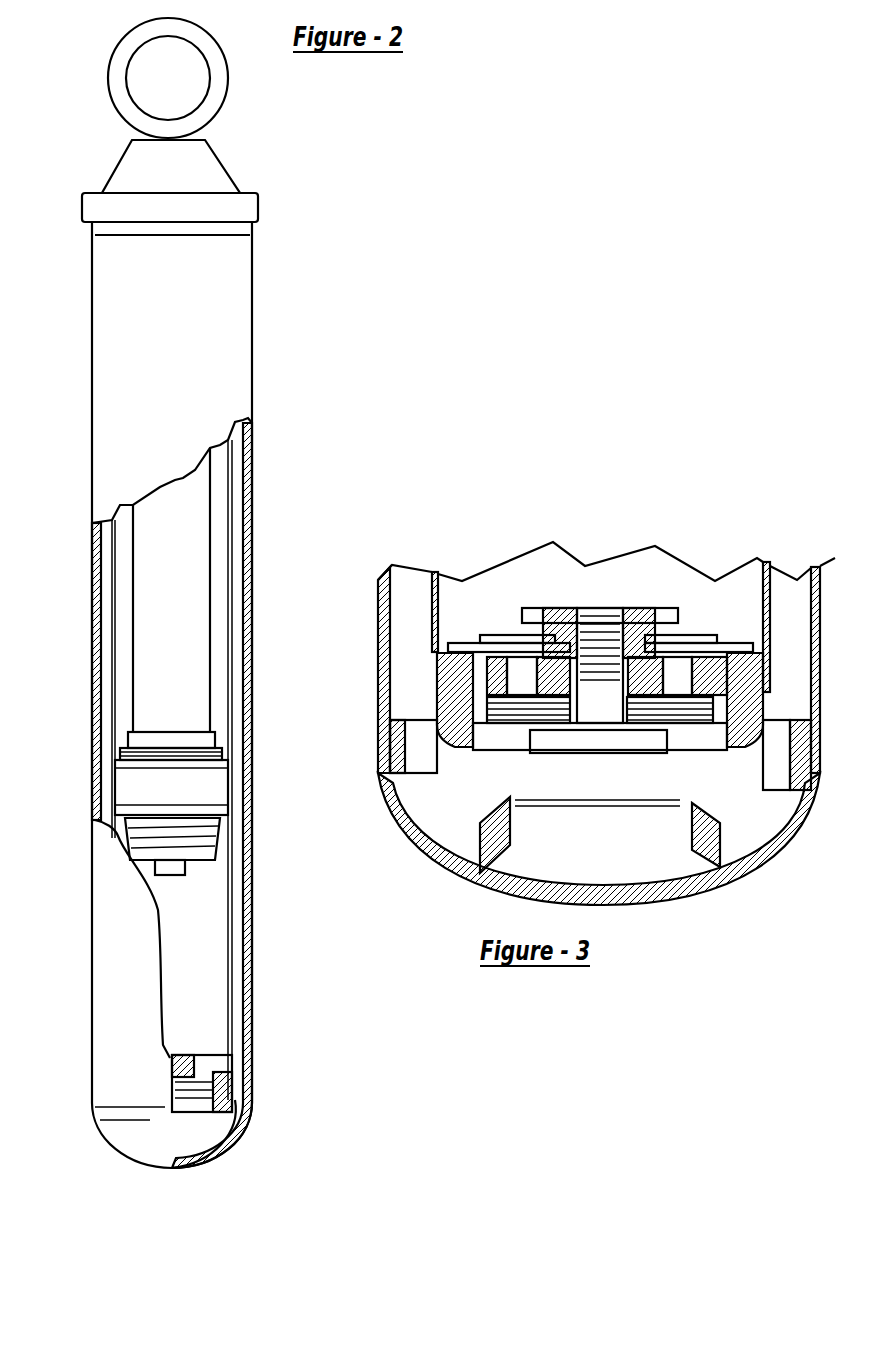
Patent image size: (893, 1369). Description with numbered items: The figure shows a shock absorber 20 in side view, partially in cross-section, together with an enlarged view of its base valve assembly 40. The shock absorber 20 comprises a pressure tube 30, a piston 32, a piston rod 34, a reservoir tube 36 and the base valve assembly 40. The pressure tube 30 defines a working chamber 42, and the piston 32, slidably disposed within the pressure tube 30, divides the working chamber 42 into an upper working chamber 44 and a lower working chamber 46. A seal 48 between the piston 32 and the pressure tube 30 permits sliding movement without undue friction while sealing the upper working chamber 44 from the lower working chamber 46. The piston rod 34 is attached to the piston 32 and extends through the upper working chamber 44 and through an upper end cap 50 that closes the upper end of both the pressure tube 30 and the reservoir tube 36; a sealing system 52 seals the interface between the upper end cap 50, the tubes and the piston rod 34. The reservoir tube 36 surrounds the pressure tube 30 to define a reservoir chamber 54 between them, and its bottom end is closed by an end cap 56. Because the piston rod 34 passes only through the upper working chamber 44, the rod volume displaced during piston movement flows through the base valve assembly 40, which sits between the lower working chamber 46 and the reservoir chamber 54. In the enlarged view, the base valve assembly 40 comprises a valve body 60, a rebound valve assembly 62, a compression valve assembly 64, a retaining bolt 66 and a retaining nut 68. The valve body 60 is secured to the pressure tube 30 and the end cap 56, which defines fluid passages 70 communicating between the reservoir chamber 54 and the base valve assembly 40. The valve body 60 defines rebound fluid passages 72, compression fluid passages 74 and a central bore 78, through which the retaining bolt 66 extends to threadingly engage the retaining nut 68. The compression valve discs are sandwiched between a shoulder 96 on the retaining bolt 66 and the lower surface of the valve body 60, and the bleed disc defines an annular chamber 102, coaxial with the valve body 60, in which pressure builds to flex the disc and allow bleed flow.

In FIG. 2, the shock absorber 20 is at (330, 172).
In FIG. 2, the pressure tube 30 is at (228, 490).
In FIG. 3, the pressure tube 30 is at (437, 652).
In FIG. 2, the piston 32 is at (133, 803).
In FIG. 2, the piston rod 34 is at (182, 597).
In FIG. 2, the reservoir tube 36 is at (92, 560).
In FIG. 3, the reservoir tube 36 is at (380, 622).
In FIG. 2, the base valve assembly 40 is at (207, 1043).
In FIG. 3, the base valve assembly 40 is at (758, 538).
In FIG. 2, the working chamber 42 is at (212, 922).
In FIG. 2, the upper working chamber 44 is at (220, 538).
In FIG. 2, the lower working chamber 46 is at (202, 990).
In FIG. 3, the lower working chamber 46 is at (549, 602).
In FIG. 2, the seal 48 is at (186, 806).
In FIG. 2, the upper end cap 50 is at (130, 165).
In FIG. 2, the sealing system 52 is at (258, 212).
In FIG. 2, the reservoir chamber 54 is at (103, 618).
In FIG. 3, the reservoir chamber 54 is at (407, 643).
In FIG. 2, the end cap 56 is at (195, 1157).
In FIG. 3, the end cap 56 is at (645, 897).
In FIG. 3, the valve body 60 is at (780, 693).
In FIG. 3, the rebound valve assembly 62 is at (695, 610).
In FIG. 3, the compression valve assembly 64 is at (635, 772).
In FIG. 3, the retaining bolt 66 is at (395, 780).
In FIG. 3, the retaining nut 68 is at (648, 608).
In FIG. 3, the fluid passages 70 is at (775, 772).
In FIG. 3, the rebound fluid passages 72 is at (480, 685).
In FIG. 3, the compression fluid passages 74 is at (758, 680).
In FIG. 3, the central bore 78 is at (545, 746).
In FIG. 3, the shoulder 96 is at (603, 718).
In FIG. 3, the annular chamber 102 is at (508, 685).